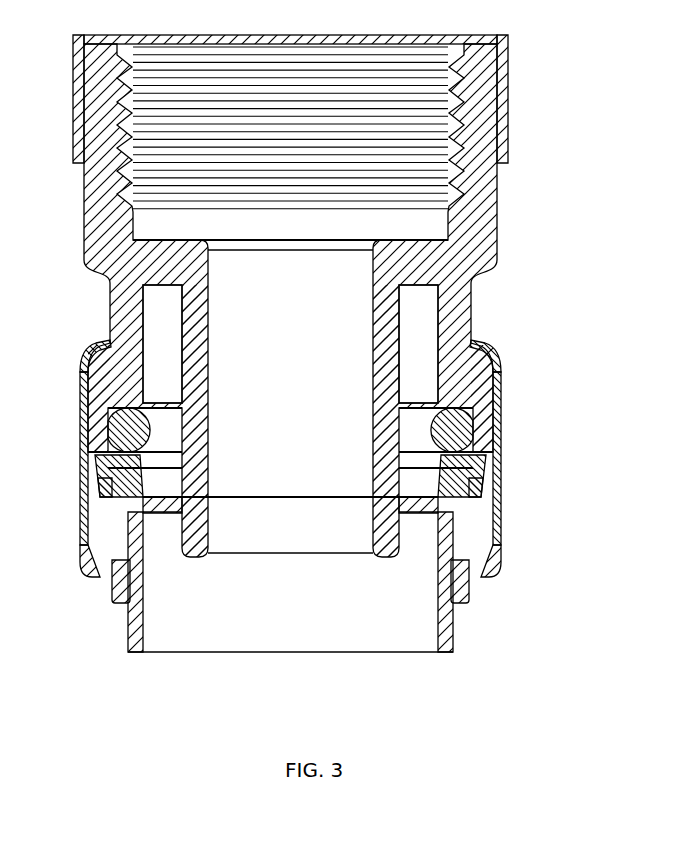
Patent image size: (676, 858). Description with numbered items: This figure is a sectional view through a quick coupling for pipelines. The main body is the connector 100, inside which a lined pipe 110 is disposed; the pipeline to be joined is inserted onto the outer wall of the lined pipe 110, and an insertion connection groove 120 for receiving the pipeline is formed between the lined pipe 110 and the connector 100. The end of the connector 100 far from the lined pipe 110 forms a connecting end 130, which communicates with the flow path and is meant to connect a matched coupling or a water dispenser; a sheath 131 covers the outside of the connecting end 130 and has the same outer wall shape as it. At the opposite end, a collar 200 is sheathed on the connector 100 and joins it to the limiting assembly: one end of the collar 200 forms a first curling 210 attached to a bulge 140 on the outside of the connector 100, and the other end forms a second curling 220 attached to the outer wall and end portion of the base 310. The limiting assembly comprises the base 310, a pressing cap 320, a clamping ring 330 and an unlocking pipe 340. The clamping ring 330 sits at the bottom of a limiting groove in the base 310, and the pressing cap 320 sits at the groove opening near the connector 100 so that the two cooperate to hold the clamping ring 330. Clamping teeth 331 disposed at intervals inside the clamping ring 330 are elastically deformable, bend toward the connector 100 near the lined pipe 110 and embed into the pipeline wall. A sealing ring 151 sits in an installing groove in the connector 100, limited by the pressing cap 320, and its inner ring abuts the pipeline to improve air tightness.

The connector 100 is at (467, 293).
The lined pipe 110 is at (197, 345).
The insertion connection groove 120 is at (417, 332).
The connecting end 130 is at (497, 150).
The sheath 131 is at (505, 72).
The bulge 140 is at (482, 365).
The sealing ring 151 is at (457, 428).
The collar 200 is at (495, 398).
The first curling 210 is at (488, 350).
The second curling 220 is at (478, 575).
The base 310 is at (470, 582).
The pressing cap 320 is at (467, 480).
The clamping ring 330 is at (483, 520).
The clamping teeth 331 is at (103, 490).
The unlocking pipe 340 is at (450, 630).